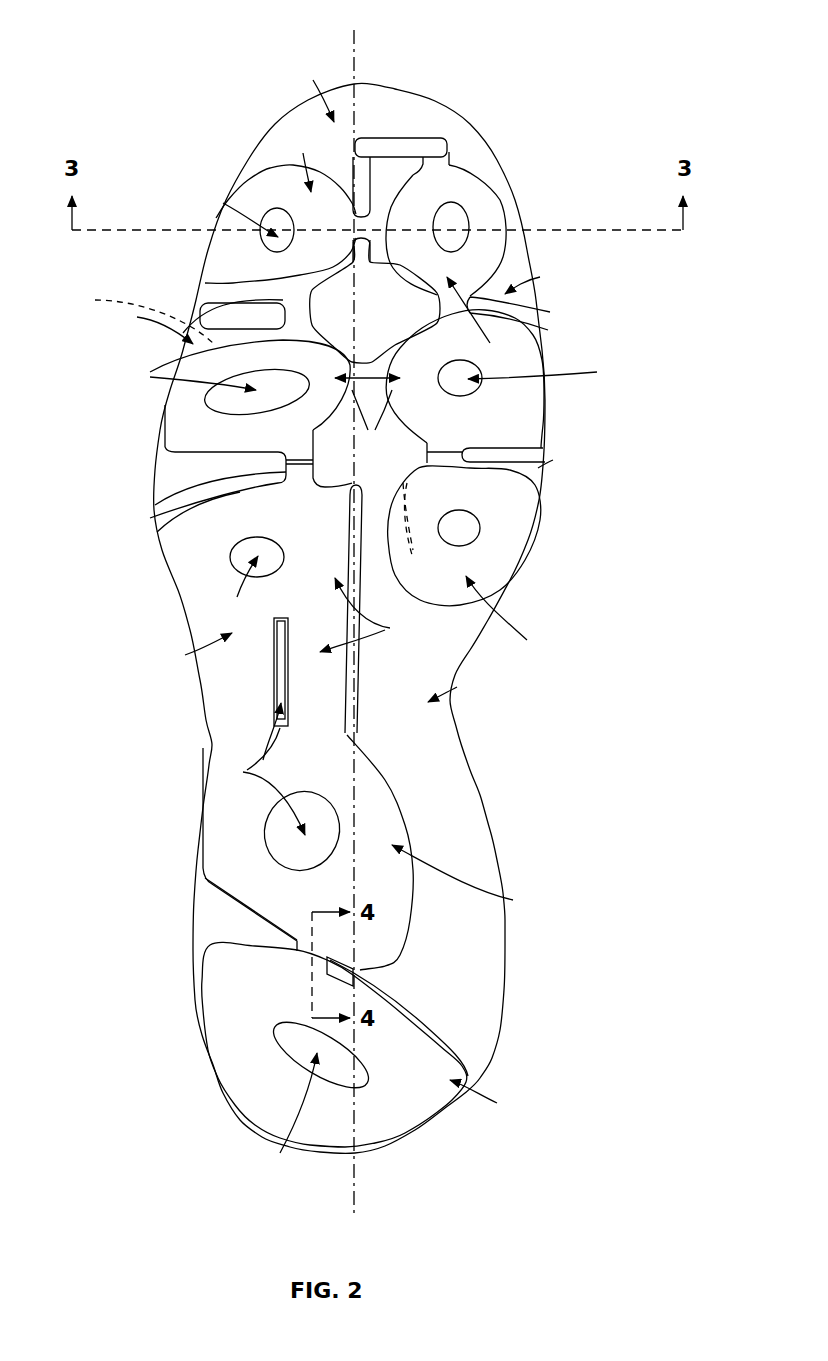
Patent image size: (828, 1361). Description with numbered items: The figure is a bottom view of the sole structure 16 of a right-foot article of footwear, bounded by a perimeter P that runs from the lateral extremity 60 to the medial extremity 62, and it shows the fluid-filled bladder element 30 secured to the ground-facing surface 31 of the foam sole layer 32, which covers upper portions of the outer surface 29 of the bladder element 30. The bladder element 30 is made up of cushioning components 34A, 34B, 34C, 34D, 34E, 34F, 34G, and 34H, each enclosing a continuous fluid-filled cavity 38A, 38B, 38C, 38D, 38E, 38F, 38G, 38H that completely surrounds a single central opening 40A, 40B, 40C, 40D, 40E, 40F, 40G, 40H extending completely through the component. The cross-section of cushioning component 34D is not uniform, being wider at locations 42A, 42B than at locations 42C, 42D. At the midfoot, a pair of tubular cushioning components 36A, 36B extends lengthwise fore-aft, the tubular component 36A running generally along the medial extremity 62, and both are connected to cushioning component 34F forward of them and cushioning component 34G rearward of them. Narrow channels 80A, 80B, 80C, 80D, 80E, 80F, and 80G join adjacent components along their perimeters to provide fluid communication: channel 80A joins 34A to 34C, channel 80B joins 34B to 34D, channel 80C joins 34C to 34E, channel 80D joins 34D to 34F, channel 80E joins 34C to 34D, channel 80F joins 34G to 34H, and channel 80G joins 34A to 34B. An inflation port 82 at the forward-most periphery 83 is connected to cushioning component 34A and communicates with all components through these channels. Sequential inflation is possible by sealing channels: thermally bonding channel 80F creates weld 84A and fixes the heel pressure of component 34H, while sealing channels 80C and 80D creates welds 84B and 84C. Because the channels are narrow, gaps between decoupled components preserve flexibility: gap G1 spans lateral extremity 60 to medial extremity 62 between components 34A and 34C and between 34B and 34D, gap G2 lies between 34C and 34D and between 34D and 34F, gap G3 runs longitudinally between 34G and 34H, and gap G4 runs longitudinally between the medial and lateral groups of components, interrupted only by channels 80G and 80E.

The sole structure 16 is at (500, 134).
The outer surface 29 is at (359, 624).
The fluid-filled bladder element 30 is at (468, 168).
The ground-facing surface 31 is at (364, 621).
The sole layer 32 is at (467, 810).
The cushioning component 34A is at (455, 190).
The cushioning component 34B is at (270, 195).
The cushioning component 34C is at (512, 367).
The cushioning component 34D is at (198, 362).
The cushioning component 34E is at (512, 508).
The cushioning component 34F is at (165, 515).
The cushioning component 34G is at (206, 825).
The cushioning component 34H is at (217, 1000).
The tubular cushioning component 36A is at (230, 670).
The tubular cushioning component 36B is at (338, 663).
The fluid-filled cavity 38A is at (505, 240).
The fluid-filled cavity 38B is at (208, 247).
The fluid-filled cavity 38C is at (540, 380).
The fluid-filled cavity 38D is at (165, 424).
The fluid-filled cavity 38E is at (512, 560).
The fluid-filled cavity 38F is at (185, 590).
The fluid-filled cavity 38G is at (200, 850).
The fluid-filled cavity 38H is at (240, 1085).
The central opening 40A is at (453, 222).
The central opening 40B is at (283, 225).
The central opening 40C is at (462, 386).
The central opening 40D is at (245, 392).
The central opening 40E is at (475, 536).
The central opening 40F is at (235, 555).
The central opening 40G is at (303, 842).
The central opening 40H is at (287, 1035).
The location 42A is at (168, 452).
The location 42B is at (375, 301).
The location 42C is at (133, 314).
The location 42D is at (148, 488).
The lateral extremity 60 is at (205, 710).
The medial extremity 62 is at (460, 723).
The channel 80A is at (530, 312).
The channel 80B is at (278, 312).
The channel 80C is at (328, 436).
The channel 80D is at (327, 470).
The channel 80E is at (392, 345).
The channel 80F is at (423, 1010).
The channel 80G is at (373, 187).
The inflation port 82 is at (420, 137).
The forward-most periphery 83 is at (473, 167).
The weld 84A is at (322, 958).
The weld 84B is at (308, 480).
The weld 84C is at (447, 457).
The gap G1 is at (220, 310).
The gap G2 is at (165, 515).
The gap G3 is at (258, 933).
The gap G4 is at (373, 280).
The perimeter P is at (150, 492).